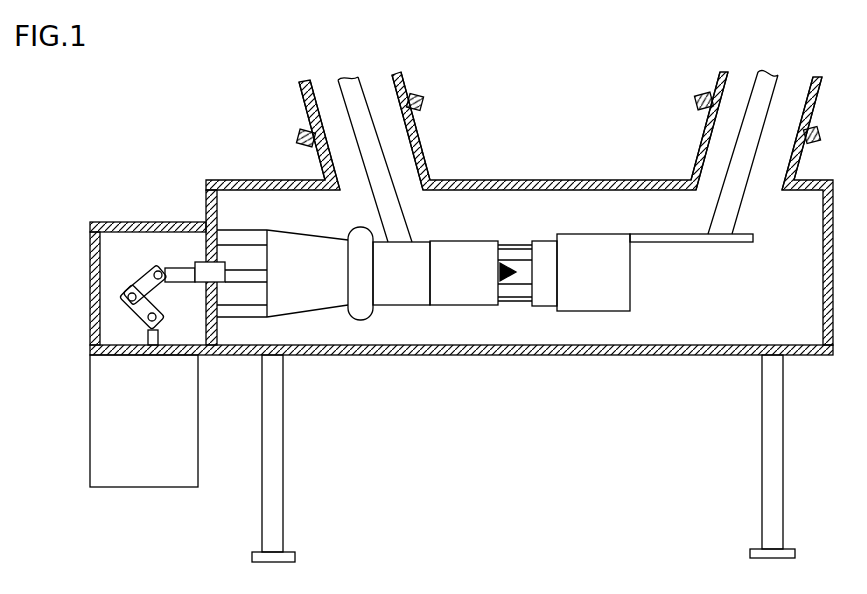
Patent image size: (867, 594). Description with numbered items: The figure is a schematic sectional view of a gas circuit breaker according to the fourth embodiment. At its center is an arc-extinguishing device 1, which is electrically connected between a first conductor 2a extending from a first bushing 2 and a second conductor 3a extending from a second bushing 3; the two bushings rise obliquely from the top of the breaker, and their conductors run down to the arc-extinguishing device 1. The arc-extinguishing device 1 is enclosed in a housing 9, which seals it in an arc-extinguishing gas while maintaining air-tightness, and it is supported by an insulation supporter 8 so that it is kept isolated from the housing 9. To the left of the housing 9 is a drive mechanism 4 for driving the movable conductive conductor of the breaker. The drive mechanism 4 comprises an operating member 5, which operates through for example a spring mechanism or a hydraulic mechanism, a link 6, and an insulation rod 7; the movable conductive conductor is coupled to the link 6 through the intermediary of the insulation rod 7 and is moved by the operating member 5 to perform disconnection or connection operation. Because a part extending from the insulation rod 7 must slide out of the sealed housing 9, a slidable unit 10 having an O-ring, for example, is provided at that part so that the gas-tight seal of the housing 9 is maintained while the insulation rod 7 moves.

The arc-extinguishing device 1 is at (477, 257).
The first bushing 2 is at (300, 101).
The first conductor 2a is at (350, 100).
The second bushing 3 is at (818, 97).
The second conductor 3a is at (767, 95).
The drive mechanism 4 is at (48, 235).
The operating member 5 is at (107, 368).
The link 6 is at (140, 310).
The insulation rod 7 is at (243, 272).
The insulation supporter 8 is at (222, 282).
The housing 9 is at (592, 185).
The slidable unit 10 is at (230, 312).